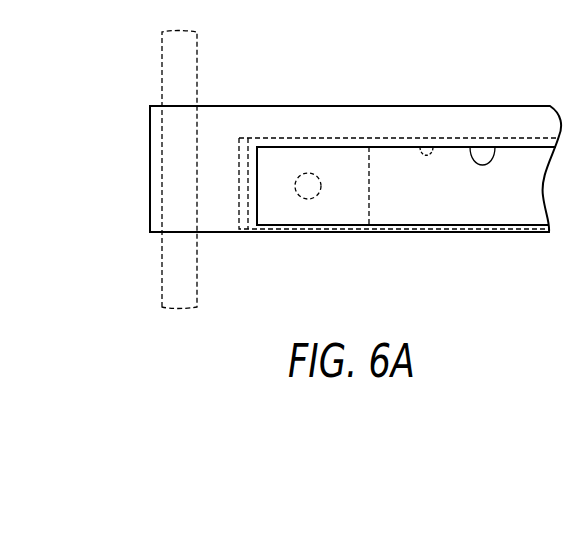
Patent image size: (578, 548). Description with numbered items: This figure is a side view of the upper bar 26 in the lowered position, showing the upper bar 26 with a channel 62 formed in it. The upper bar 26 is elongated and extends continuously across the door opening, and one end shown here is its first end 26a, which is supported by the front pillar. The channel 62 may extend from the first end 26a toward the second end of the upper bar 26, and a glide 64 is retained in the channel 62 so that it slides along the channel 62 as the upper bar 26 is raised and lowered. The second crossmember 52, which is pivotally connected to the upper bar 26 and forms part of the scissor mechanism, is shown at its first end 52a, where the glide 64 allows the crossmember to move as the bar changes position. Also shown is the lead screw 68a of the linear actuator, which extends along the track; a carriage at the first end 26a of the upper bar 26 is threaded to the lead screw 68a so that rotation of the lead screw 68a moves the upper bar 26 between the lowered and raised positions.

The upper bar 26 is at (338, 106).
The first end 26a is at (205, 106).
The second crossmember 52 is at (495, 147).
The first end 52a is at (258, 182).
The channel 62 is at (435, 147).
The glide 64 is at (368, 147).
The lead screw 68a is at (160, 73).